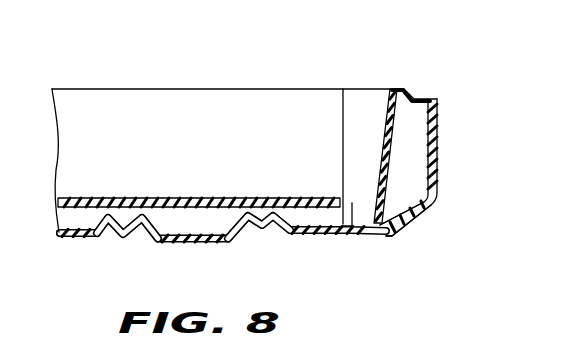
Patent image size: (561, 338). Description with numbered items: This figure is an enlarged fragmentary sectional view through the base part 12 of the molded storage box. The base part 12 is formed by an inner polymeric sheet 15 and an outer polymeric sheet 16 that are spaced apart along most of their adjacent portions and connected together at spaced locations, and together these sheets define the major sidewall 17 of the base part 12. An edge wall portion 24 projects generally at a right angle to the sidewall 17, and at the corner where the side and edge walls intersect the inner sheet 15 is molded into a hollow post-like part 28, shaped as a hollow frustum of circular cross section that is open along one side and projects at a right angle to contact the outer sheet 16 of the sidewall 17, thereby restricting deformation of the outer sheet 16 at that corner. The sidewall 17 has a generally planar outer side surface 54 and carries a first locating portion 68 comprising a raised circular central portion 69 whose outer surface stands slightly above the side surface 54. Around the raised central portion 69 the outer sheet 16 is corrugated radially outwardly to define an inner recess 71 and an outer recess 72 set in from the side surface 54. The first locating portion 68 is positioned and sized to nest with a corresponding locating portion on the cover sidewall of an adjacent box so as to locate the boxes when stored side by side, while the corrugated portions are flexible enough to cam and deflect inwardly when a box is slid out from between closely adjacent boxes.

The base part 12 is at (173, 86).
The inner polymeric sheet 15 is at (293, 105).
The outer polymeric sheet 16 is at (440, 143).
The sidewall 17 is at (358, 236).
The edge wall portion 24 is at (440, 118).
The hollow post-like part 28 is at (364, 123).
The outer side surface 54 is at (68, 239).
The first locating portion 68 is at (130, 226).
The raised central portion 69 is at (195, 243).
The inner recess 71 is at (148, 236).
The outer recess 72 is at (113, 238).